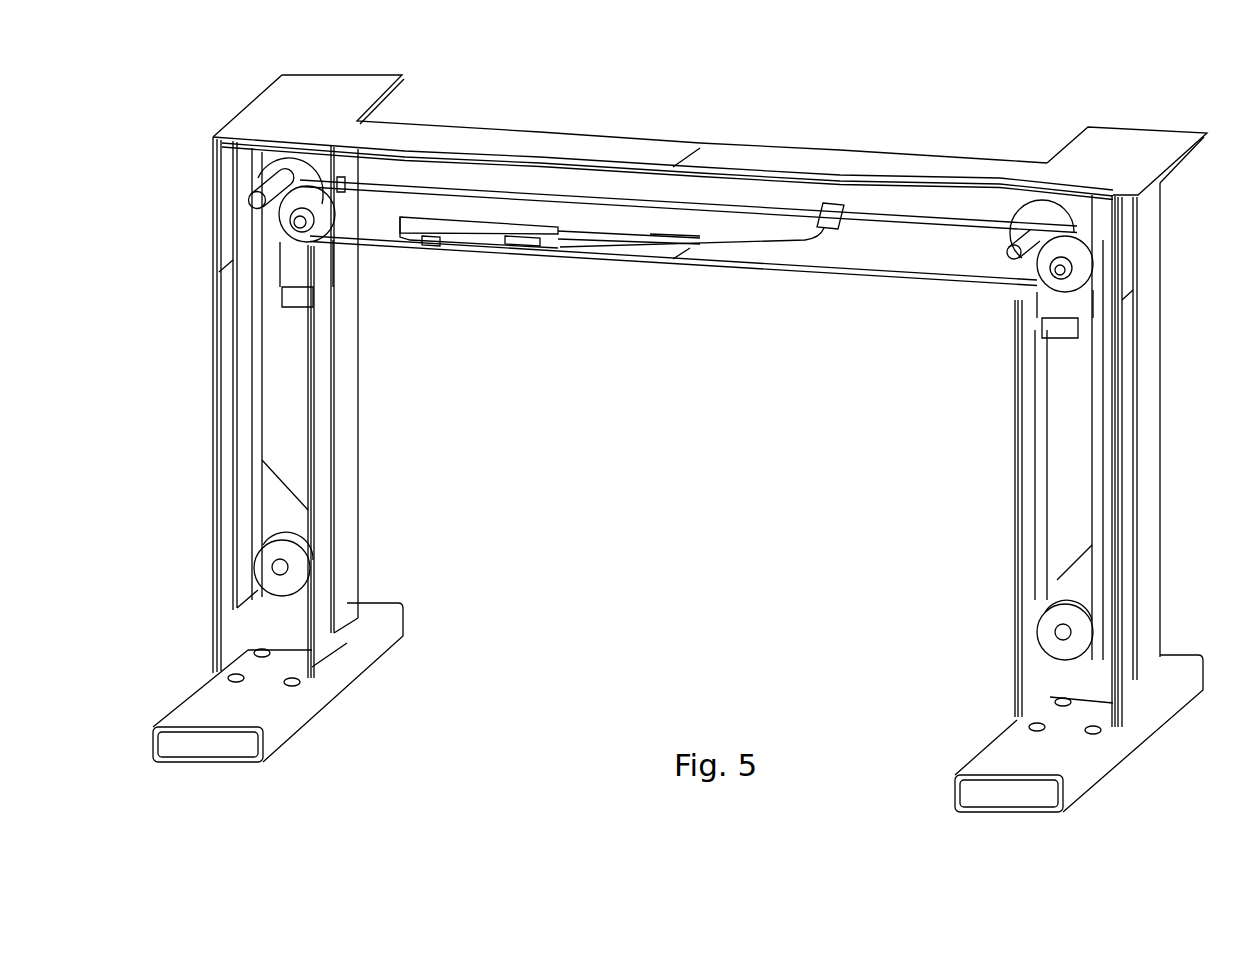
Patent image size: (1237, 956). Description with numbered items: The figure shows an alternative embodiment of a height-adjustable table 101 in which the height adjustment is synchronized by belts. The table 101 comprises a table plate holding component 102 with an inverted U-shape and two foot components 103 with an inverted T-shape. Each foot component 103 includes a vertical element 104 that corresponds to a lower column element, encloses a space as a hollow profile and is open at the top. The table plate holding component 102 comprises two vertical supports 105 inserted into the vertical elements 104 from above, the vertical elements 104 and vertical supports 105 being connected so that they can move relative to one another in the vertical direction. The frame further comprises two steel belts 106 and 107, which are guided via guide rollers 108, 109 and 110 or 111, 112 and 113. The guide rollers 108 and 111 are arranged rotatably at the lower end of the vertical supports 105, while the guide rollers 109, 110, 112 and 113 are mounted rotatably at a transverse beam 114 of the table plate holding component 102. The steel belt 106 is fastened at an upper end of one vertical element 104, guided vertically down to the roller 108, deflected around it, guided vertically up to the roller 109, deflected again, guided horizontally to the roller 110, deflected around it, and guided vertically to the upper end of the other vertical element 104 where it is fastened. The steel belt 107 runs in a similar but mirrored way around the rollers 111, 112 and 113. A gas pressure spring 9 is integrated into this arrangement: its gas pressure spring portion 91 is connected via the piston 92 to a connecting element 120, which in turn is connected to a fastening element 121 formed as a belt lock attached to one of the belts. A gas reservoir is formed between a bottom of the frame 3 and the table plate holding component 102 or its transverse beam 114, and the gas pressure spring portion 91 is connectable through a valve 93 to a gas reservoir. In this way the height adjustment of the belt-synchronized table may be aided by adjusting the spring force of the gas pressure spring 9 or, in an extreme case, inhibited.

The table 101 is at (428, 563).
The table plate holding component 102 is at (250, 104).
The foot component 103 is at (383, 643).
The vertical element 104 is at (216, 640).
The vertical support 105 is at (237, 527).
The steel belt 106 is at (937, 192).
The steel belt 107 is at (947, 232).
The guide roller 108 is at (296, 570).
The guide roller 109 is at (260, 175).
The guide roller 110 is at (1033, 203).
The guide roller 111 is at (1045, 624).
The guide roller 112 is at (1042, 275).
The guide roller 113 is at (328, 240).
The transverse beam 114 is at (637, 152).
The connecting element 120 is at (775, 240).
The fastening element 121 is at (828, 232).
The frame 3 is at (598, 255).
The gas pressure spring 9 is at (490, 243).
The gas pressure spring portion 91 is at (517, 237).
The piston 92 is at (650, 247).
The valve 93 is at (435, 247).